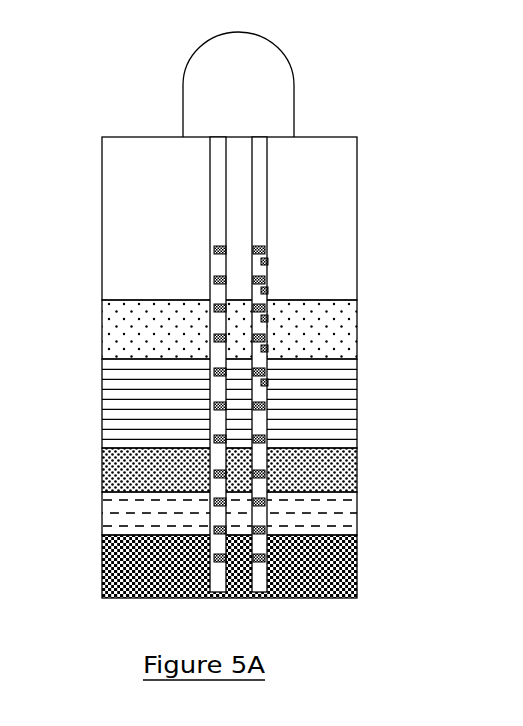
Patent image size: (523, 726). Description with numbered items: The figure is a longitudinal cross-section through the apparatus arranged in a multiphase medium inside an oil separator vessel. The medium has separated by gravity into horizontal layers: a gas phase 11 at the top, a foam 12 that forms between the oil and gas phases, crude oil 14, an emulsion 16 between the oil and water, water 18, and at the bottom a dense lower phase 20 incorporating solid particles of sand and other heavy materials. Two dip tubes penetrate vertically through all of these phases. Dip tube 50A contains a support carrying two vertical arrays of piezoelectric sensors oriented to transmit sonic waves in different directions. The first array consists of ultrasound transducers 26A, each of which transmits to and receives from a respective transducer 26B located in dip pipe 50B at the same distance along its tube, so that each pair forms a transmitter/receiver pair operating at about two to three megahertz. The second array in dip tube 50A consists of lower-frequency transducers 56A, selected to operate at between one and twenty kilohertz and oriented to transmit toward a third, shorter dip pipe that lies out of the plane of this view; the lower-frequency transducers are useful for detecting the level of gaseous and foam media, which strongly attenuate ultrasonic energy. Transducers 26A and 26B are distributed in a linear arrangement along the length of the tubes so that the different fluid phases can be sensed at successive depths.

The gas phase 11 is at (125, 265).
The foam 12 is at (125, 343).
The crude oil 14 is at (125, 425).
The emulsion 16 is at (125, 472).
The water 18 is at (125, 528).
The dense lower phase 20 is at (125, 585).
The dip tube 50A is at (218, 157).
The dip pipe 50B is at (263, 158).
The ultrasound transducers 26A is at (220, 305).
The ultrasound transducers 26B is at (267, 280).
The piezoelectric sensors 56A is at (268, 348).